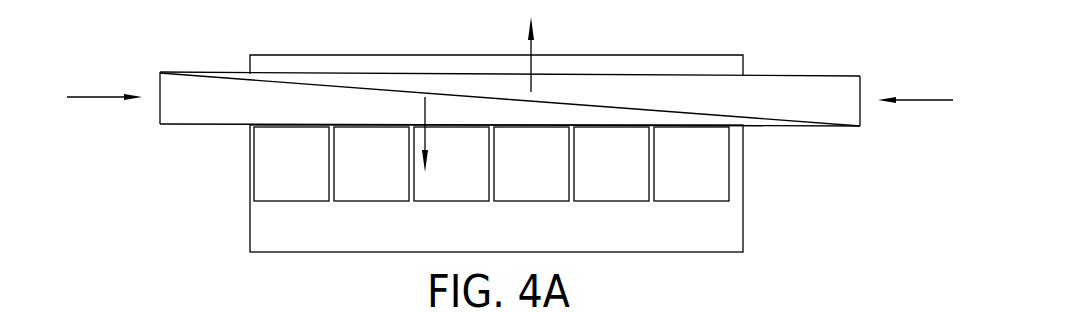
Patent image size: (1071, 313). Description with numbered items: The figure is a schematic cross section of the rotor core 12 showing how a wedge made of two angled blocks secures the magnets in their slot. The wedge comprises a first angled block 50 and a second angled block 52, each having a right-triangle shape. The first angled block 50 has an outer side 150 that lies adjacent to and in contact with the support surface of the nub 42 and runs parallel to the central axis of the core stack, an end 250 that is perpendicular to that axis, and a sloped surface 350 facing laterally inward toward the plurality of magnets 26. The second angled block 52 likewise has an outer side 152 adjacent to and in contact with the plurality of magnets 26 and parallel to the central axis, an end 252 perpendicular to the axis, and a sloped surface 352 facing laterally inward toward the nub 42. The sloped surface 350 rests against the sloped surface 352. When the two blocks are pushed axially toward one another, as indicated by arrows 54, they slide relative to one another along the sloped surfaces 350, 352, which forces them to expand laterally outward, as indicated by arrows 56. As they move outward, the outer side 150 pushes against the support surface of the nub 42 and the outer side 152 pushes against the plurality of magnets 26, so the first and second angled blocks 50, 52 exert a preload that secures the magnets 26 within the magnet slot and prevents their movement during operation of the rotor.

The rotor core 12 is at (758, 232).
The plurality of magnets 26 is at (278, 174).
The nub 42 is at (350, 55).
The first angled block 50 is at (802, 110).
The second angled block 52 is at (226, 112).
The arrows 54 is at (90, 97).
The arrows 56 is at (531, 65).
The outer side 150 is at (672, 75).
The outer side 152 is at (295, 127).
The end 250 is at (862, 113).
The end 252 is at (158, 110).
The sloped surface 350 is at (597, 106).
The sloped surface 352 is at (402, 91).